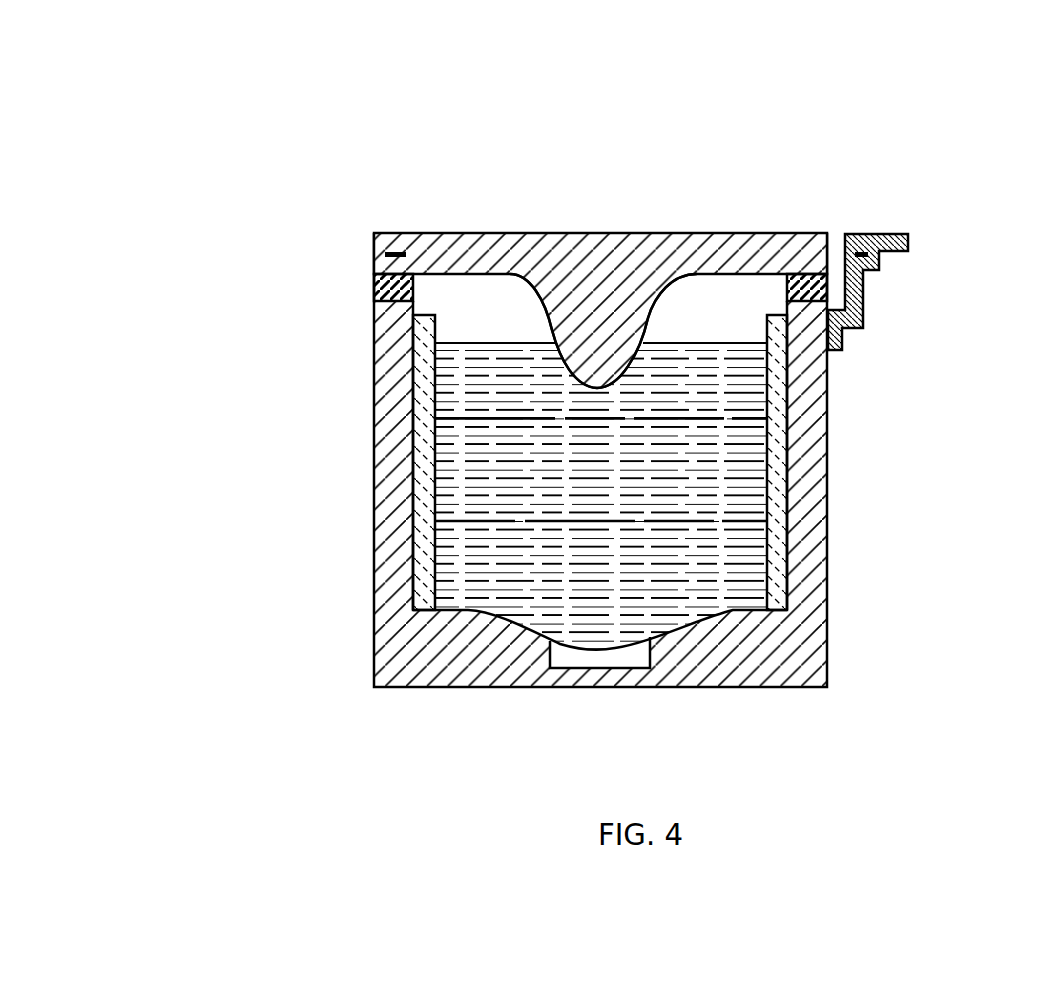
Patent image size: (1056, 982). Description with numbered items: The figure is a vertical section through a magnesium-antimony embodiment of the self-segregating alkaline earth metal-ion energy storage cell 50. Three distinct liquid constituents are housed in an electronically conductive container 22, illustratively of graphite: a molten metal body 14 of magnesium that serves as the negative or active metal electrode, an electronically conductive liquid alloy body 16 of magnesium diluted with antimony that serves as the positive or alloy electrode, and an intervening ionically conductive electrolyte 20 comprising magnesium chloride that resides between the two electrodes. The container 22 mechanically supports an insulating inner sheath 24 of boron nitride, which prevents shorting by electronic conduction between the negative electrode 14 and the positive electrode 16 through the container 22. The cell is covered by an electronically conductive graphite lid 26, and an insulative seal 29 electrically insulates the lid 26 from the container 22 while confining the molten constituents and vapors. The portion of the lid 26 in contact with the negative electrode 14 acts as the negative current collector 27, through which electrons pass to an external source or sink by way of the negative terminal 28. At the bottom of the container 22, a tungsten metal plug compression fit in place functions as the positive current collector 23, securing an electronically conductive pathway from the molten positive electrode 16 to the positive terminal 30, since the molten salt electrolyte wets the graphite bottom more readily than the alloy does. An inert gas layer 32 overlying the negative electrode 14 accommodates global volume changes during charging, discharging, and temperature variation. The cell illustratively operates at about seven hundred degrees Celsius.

The cell 50 is at (308, 123).
The molten metal body 14 is at (452, 376).
The electronically conductive liquid alloy body 16 is at (460, 557).
The electrolyte 20 is at (453, 462).
The container 22 is at (797, 650).
The positive current collector 23 is at (650, 668).
The insulating inner sheath 24 is at (780, 543).
The lid 26 is at (584, 236).
The negative current collector 27 is at (603, 353).
The negative terminal 28 is at (377, 247).
The insulative seal 29 is at (378, 280).
The positive terminal 30 is at (870, 235).
The inert gas layer 32 is at (724, 294).